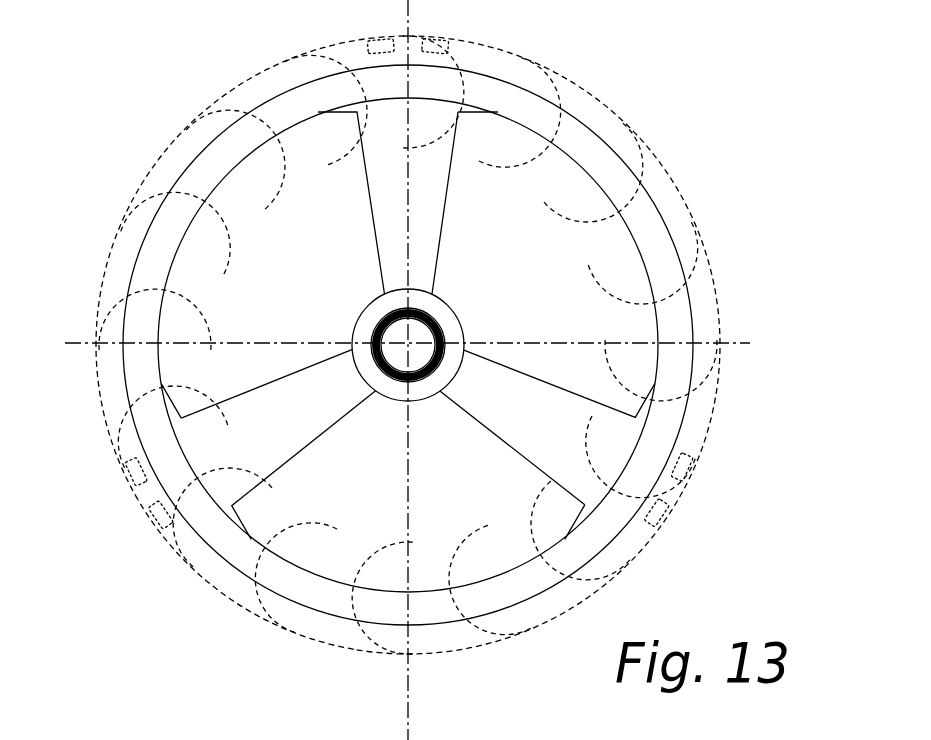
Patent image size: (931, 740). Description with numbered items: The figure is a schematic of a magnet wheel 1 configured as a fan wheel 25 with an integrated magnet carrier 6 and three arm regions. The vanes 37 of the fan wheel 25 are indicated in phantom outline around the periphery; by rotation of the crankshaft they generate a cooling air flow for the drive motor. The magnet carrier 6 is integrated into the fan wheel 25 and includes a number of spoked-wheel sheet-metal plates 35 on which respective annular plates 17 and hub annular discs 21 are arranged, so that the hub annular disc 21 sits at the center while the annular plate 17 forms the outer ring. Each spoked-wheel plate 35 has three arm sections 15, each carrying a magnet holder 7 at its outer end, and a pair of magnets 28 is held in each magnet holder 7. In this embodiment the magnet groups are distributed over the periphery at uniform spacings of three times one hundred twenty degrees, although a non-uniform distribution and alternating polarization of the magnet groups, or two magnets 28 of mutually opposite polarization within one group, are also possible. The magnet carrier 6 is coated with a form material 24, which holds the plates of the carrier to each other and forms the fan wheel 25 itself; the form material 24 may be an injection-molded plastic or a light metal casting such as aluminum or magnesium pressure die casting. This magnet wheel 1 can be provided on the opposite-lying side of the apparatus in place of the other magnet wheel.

The magnet wheel 1 is at (618, 82).
The magnet carrier 6 is at (343, 603).
The magnet holder 7 is at (690, 510).
The arm section 15 is at (435, 210).
The annular plate 17 is at (167, 248).
The hub annular disc 21 is at (372, 320).
The form material 24 is at (138, 497).
The fan wheel 25 is at (235, 602).
The magnets 28 is at (652, 512).
The spoked-wheel sheet-metal plate 35 is at (250, 390).
The vanes 37 is at (122, 414).